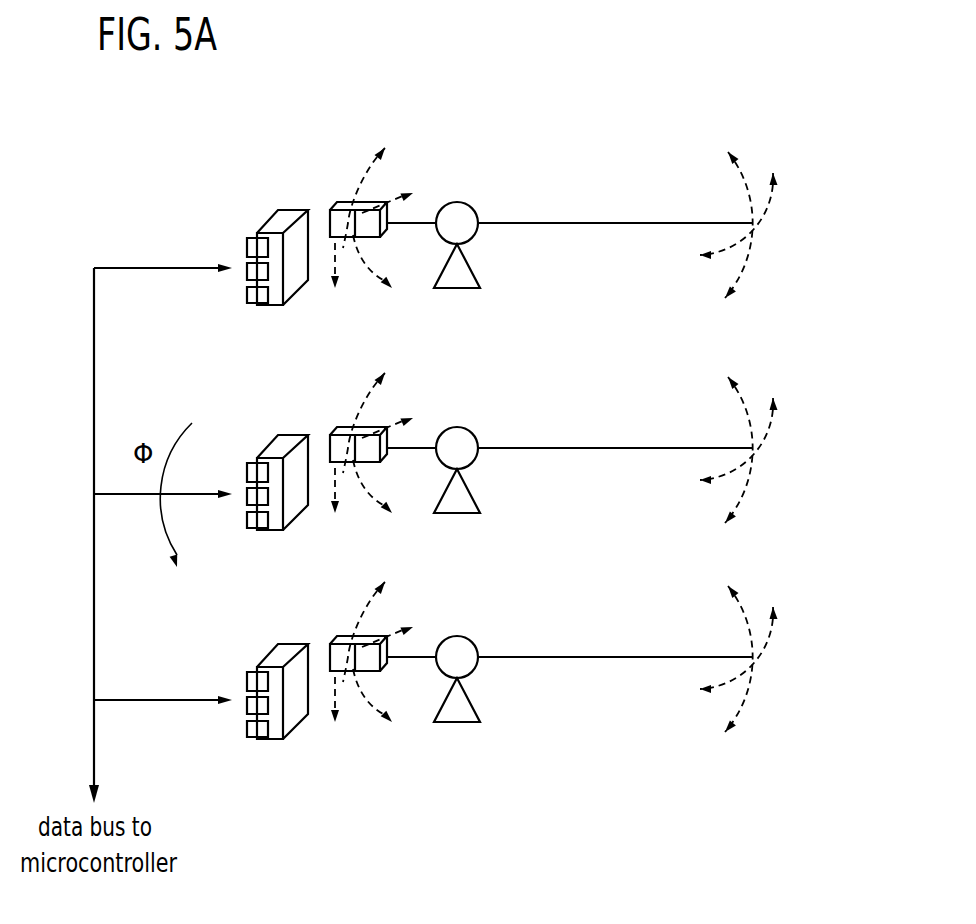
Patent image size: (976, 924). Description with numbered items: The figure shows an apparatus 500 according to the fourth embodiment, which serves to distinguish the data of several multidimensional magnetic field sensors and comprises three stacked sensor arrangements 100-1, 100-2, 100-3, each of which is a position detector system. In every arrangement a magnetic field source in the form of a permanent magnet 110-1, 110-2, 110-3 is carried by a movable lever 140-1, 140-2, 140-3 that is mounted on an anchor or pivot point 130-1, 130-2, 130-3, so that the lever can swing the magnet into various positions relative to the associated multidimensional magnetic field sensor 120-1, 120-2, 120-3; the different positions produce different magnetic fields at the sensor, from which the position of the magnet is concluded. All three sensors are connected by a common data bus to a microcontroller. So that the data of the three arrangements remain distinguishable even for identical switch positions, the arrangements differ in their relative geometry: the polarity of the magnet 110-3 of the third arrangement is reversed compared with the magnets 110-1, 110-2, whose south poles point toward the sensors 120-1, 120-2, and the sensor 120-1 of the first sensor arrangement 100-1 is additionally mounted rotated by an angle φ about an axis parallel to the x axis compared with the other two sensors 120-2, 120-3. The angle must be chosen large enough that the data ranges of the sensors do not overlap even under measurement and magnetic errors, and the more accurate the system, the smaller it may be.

The apparatus 500 is at (642, 125).
The first sensor arrangement 100-1 is at (541, 432).
The second sensor arrangement 100-2 is at (541, 643).
The third sensor arrangement 100-3 is at (541, 197).
The first magnetic field source 110-1 is at (346, 407).
The second magnetic field source 110-2 is at (346, 616).
The third magnetic field source 110-3 is at (346, 182).
The first multidimensional magnetic field sensor 120-1 is at (254, 440).
The second multidimensional magnetic field sensor 120-2 is at (254, 649).
The third multidimensional magnetic field sensor 120-3 is at (254, 215).
The pivot point 130-1 is at (480, 470).
The pivot point 130-2 is at (480, 679).
The pivot point 130-3 is at (480, 245).
The movable lever 140-1 is at (628, 450).
The movable lever 140-2 is at (628, 659).
The movable lever 140-3 is at (628, 225).